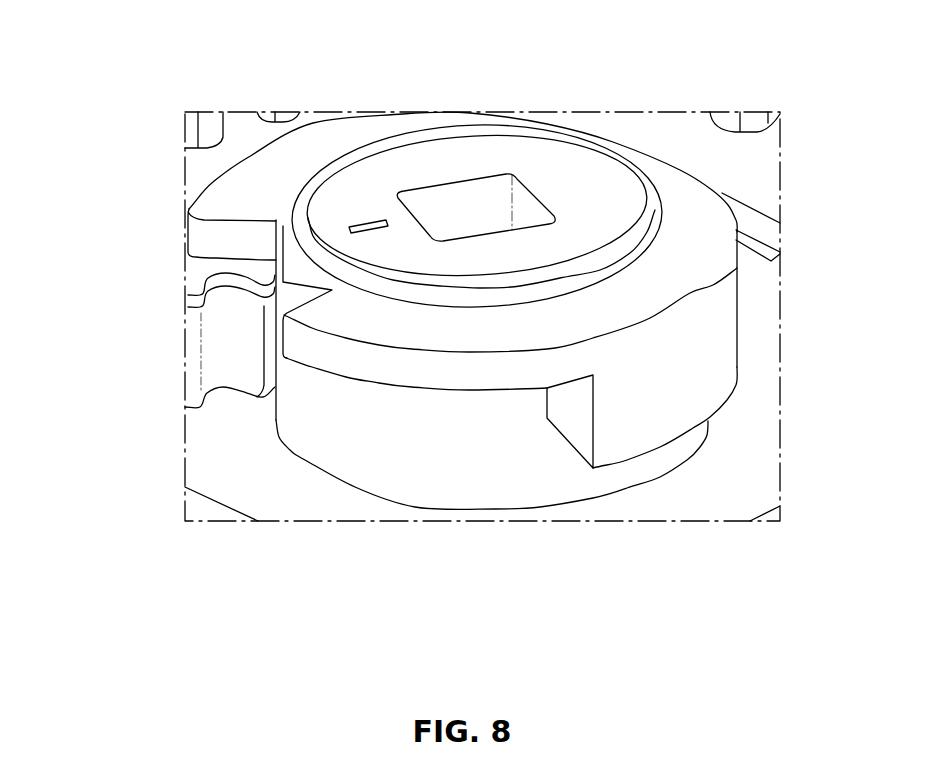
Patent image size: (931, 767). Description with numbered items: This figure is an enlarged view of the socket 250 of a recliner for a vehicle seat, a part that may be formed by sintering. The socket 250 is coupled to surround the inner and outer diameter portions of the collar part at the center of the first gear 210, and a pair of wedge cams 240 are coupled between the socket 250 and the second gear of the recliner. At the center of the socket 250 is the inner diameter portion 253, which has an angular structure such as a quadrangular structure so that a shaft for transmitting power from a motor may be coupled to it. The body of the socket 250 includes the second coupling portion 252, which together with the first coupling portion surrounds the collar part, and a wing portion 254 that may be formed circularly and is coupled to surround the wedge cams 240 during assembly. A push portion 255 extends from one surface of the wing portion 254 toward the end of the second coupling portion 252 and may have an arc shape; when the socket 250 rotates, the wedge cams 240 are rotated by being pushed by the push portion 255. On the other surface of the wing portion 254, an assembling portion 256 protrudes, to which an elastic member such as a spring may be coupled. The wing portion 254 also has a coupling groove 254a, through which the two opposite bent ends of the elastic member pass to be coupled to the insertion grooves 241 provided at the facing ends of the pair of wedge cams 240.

The first gear 210 is at (237, 471).
The wedge cam 240 is at (193, 278).
The insertion groove 241 is at (212, 337).
The socket 250 is at (344, 126).
The second coupling portion 252 is at (502, 443).
The inner diameter portion 253 is at (470, 197).
The wing portion 254 is at (360, 367).
The coupling groove 254a is at (222, 242).
The push portion 255 is at (616, 428).
The assembling portion 256 is at (633, 258).